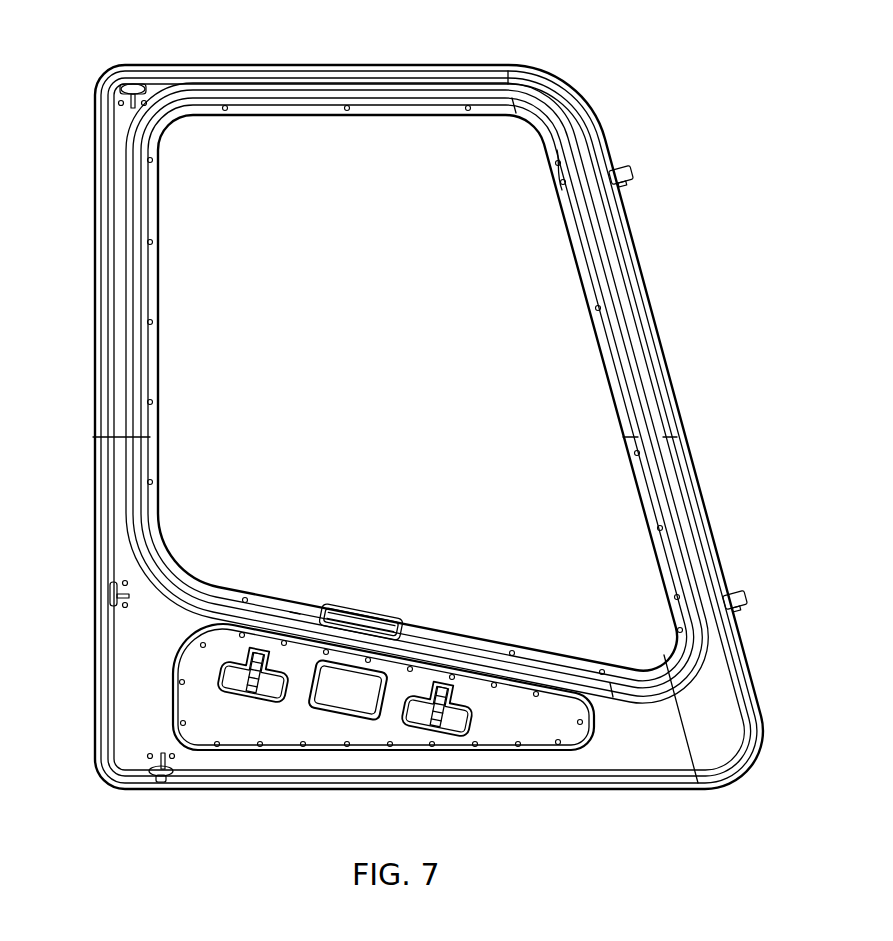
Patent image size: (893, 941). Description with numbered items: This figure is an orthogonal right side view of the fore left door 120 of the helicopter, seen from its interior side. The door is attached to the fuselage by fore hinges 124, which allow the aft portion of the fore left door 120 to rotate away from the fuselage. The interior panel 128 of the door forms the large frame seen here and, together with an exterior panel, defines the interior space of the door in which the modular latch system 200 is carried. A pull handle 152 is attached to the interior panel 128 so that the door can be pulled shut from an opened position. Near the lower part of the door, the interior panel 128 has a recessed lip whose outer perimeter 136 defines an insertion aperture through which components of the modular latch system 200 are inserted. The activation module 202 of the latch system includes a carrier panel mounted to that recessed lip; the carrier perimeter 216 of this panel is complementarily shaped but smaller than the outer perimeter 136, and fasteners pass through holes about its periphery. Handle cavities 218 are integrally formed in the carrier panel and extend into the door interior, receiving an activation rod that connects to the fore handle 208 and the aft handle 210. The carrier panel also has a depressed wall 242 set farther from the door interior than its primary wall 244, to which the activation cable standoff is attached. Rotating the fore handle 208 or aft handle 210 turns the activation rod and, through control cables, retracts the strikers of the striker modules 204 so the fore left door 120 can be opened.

The fore left door 120 is at (323, 65).
The fore hinges 124 is at (634, 172).
The interior panel 128 is at (130, 688).
The outer perimeter 136 is at (193, 632).
The pull handle 152 is at (352, 611).
The modular latch system 200 is at (526, 683).
The activation module 202 is at (299, 636).
The striker modules 204 is at (133, 83).
The fore handle 208 is at (453, 750).
The aft handle 210 is at (254, 686).
The carrier perimeter 216 is at (224, 650).
The handle cavities 218 is at (240, 700).
The depressed wall 242 is at (357, 686).
The primary wall 244 is at (432, 700).